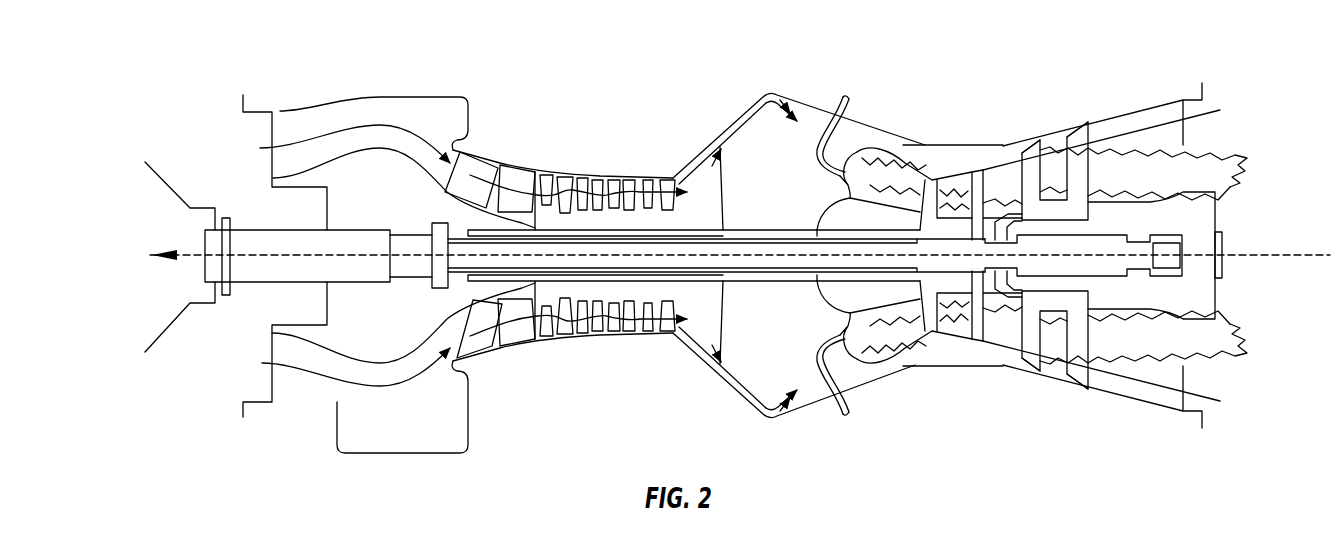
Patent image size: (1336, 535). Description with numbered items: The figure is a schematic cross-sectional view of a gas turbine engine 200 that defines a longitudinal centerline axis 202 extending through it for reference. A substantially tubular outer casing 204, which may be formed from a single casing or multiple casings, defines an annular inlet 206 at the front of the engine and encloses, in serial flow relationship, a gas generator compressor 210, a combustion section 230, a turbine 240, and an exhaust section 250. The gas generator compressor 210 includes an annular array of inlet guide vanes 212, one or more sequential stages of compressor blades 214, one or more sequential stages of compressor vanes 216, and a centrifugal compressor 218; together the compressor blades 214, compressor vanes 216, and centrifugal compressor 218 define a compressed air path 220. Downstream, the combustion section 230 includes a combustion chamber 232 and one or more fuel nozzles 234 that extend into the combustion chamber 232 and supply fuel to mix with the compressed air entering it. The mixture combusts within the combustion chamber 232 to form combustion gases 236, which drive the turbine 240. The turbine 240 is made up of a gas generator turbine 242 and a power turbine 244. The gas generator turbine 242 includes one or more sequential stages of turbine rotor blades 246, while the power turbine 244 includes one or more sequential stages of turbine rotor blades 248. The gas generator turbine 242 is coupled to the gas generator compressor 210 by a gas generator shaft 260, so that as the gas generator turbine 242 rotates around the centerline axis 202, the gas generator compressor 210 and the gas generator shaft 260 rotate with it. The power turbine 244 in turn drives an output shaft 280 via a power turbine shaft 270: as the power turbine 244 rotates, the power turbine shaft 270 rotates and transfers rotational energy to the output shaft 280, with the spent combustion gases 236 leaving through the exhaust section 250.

The gas turbine engine 200 is at (270, 443).
The centerline axis 202 is at (138, 250).
The outer casing 204 is at (553, 160).
The annular inlet 206 is at (280, 125).
The gas generator compressor 210 is at (563, 350).
The inlet guide vanes 212 is at (510, 312).
The compressor blades 214 is at (545, 183).
The compressor vanes 216 is at (600, 330).
The centrifugal compressor 218 is at (700, 337).
The compressed air path 220 is at (497, 175).
The combustion section 230 is at (812, 374).
The combustion chamber 232 is at (877, 149).
The fuel nozzles 234 is at (868, 153).
The combustion gases 236 is at (873, 330).
The turbine 240 is at (1043, 376).
The gas generator turbine 242 is at (986, 332).
The power turbine 244 is at (1102, 148).
The turbine rotor blades 246 is at (977, 177).
The turbine rotor blades 248 is at (1077, 137).
The exhaust section 250 is at (1175, 424).
The gas generator shaft 260 is at (753, 222).
The power turbine shaft 270 is at (1098, 268).
The output shaft 280 is at (243, 238).